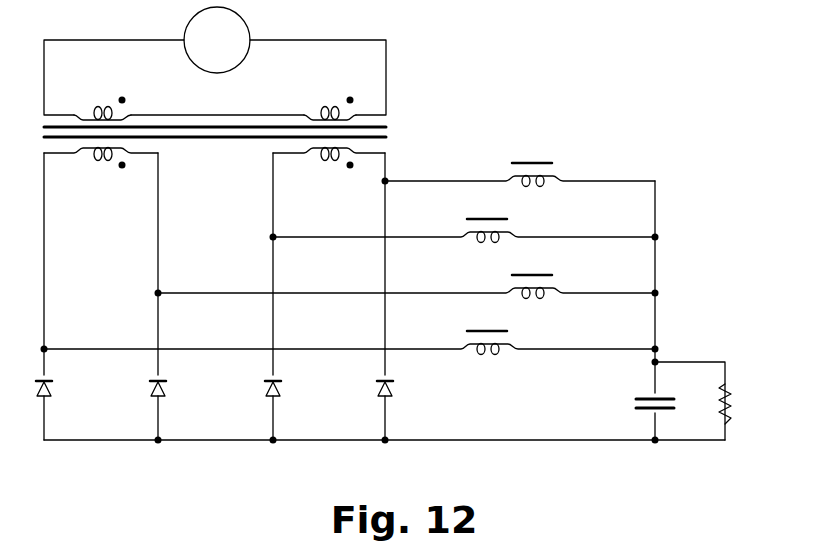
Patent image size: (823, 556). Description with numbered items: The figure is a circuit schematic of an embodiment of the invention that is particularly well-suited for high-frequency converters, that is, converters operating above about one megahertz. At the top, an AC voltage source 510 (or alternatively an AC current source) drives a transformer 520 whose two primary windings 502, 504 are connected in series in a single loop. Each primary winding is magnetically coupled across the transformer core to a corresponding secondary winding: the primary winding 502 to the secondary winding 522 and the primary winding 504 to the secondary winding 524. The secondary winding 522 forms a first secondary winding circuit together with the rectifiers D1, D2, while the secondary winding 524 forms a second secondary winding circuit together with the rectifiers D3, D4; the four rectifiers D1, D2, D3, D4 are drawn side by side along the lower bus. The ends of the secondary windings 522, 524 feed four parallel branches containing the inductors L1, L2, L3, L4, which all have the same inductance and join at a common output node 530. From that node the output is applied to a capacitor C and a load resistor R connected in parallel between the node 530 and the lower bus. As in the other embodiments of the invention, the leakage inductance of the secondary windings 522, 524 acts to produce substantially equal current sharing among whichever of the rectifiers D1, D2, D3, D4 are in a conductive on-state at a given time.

The primary winding 502 is at (96, 107).
The primary winding 504 is at (323, 107).
The AC voltage source 510 is at (238, 20).
The transformer 520 is at (387, 131).
The secondary winding 522 is at (97, 160).
The secondary winding 524 is at (324, 160).
The output node 530 is at (658, 361).
The inductor L1 is at (552, 163).
The inductor L2 is at (507, 219).
The inductor L3 is at (552, 275).
The inductor L4 is at (507, 331).
The output capacitor C is at (674, 399).
The load resistor R is at (731, 406).
The rectifier D1 is at (50, 392).
The rectifier D2 is at (164, 392).
The rectifier D3 is at (279, 392).
The rectifier D4 is at (391, 392).